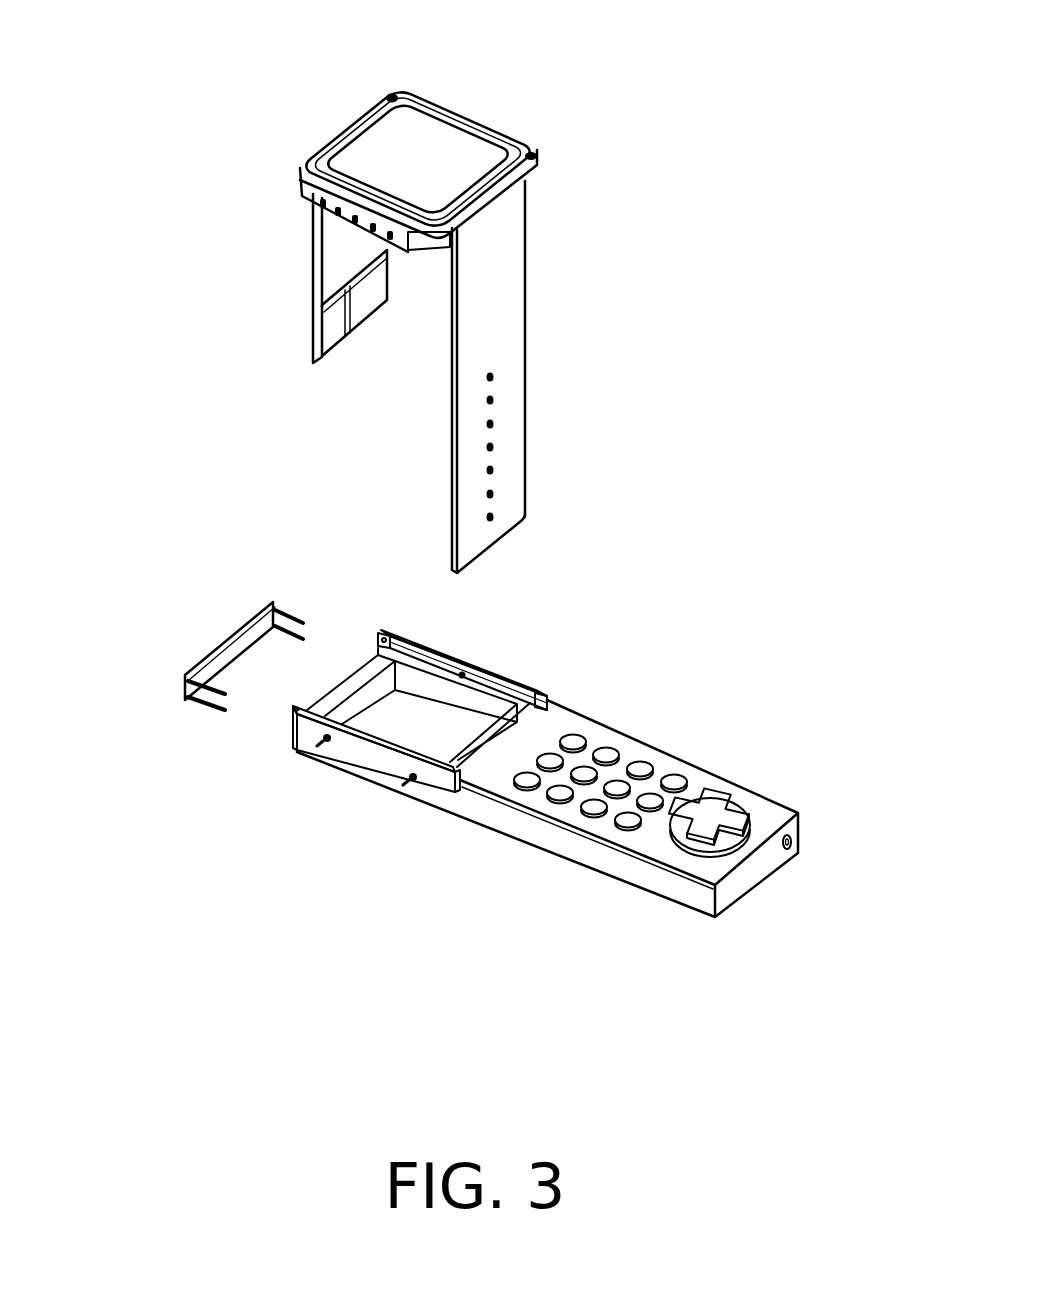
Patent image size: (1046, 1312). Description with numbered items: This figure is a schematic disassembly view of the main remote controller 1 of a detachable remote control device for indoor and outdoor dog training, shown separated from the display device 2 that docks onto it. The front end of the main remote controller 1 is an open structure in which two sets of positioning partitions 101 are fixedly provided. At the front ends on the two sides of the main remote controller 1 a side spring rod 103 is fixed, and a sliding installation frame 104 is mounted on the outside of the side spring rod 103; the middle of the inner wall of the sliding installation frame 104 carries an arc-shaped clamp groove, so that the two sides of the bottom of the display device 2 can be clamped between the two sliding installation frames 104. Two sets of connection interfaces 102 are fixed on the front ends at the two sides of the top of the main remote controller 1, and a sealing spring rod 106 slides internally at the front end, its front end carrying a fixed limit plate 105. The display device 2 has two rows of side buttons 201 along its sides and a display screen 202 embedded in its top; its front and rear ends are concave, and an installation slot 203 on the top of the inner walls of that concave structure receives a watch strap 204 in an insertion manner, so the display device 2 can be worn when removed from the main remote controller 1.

The main remote controller 1 is at (632, 755).
The display device 2 is at (318, 185).
The positioning partitions 101 is at (347, 705).
The connection interfaces 102 is at (462, 674).
The side spring rod 103 is at (323, 737).
The sliding installation frame 104 is at (390, 762).
The limit plate 105 is at (247, 638).
The sealing spring rod 106 is at (296, 615).
The side buttons 201 is at (400, 243).
The display screen 202 is at (383, 152).
The installation slot 203 is at (390, 97).
The watch strap 204 is at (327, 270).